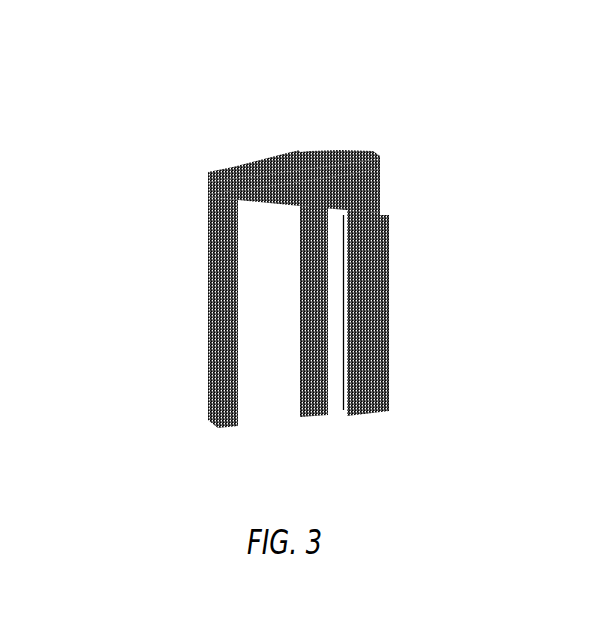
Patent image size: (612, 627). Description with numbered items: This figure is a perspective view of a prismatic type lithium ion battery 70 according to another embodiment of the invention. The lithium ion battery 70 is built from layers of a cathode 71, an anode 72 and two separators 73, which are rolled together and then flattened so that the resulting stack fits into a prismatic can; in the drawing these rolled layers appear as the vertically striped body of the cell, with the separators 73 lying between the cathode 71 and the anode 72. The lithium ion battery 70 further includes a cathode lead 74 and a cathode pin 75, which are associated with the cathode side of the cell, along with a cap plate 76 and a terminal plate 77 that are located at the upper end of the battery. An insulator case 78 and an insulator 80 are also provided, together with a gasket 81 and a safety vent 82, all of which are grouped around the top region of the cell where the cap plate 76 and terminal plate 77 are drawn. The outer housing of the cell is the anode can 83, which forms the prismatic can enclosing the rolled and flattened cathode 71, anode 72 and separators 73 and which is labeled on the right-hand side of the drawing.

The prismatic type lithium ion battery 70 is at (499, 36).
The cathode 71 is at (305, 398).
The anode 72 is at (318, 380).
The separators 73 is at (303, 198).
The cathode lead 74 is at (262, 210).
The cathode pin 75 is at (293, 158).
The cap plate 76 is at (342, 150).
The terminal plate 77 is at (276, 162).
The insulator case 78 is at (337, 172).
The insulator 80 is at (262, 170).
The gasket 81 is at (272, 175).
The safety vent 82 is at (238, 177).
The anode can 83 is at (377, 372).